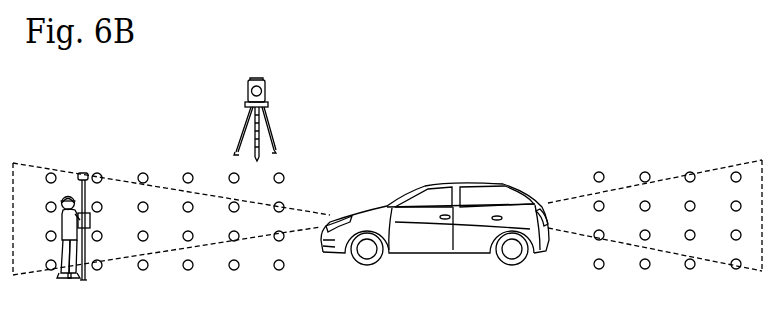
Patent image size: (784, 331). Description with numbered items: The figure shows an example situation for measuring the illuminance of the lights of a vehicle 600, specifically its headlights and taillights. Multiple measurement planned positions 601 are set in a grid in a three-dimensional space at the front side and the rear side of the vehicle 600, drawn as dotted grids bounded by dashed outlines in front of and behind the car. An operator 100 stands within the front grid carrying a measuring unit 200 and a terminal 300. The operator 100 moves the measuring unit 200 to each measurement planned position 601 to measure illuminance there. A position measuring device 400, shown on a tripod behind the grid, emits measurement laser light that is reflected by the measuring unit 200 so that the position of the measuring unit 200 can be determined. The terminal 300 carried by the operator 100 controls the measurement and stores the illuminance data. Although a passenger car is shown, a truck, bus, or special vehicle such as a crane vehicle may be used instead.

The operator 100 is at (56, 218).
The measuring unit 200 is at (90, 241).
The terminal 300 is at (92, 221).
The position measuring device 400 is at (300, 77).
The vehicle 600 is at (485, 183).
The measurement planned positions 601 is at (143, 172).